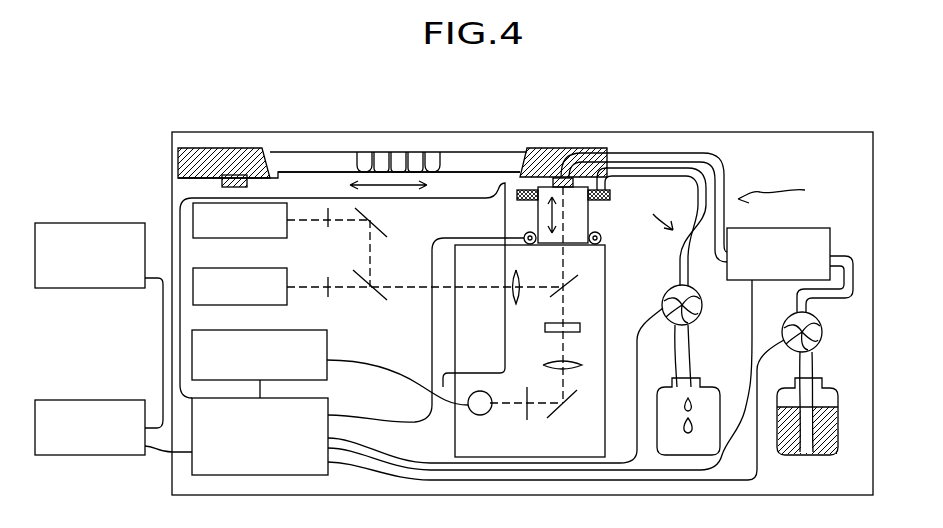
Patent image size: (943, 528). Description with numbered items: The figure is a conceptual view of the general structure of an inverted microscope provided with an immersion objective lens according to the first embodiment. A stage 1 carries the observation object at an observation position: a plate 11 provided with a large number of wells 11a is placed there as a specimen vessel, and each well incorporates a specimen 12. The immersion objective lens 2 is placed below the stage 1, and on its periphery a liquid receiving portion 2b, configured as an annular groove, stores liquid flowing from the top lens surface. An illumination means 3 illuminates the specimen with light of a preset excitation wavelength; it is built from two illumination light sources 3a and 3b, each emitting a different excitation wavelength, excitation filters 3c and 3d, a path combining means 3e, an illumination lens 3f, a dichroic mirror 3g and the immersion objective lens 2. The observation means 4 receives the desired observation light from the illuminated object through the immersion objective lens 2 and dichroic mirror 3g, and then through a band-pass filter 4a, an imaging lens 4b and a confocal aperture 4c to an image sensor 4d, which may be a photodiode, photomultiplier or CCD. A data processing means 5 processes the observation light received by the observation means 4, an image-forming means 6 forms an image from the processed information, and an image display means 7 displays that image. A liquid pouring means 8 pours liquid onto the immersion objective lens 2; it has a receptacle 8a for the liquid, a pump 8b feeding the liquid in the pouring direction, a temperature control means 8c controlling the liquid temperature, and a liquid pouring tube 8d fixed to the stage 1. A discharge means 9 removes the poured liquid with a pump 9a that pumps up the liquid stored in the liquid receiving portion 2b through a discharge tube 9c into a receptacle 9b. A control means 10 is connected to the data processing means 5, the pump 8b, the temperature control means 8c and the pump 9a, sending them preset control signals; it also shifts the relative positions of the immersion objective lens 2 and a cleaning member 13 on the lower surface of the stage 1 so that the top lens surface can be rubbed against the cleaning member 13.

The stage 1 is at (572, 153).
The immersion objective lens 2 is at (538, 217).
The liquid receiving portion 2b is at (598, 200).
The illumination means 3 is at (468, 200).
The illumination light source 3a is at (240, 233).
The illumination light source 3b is at (240, 300).
The excitation filter 3c is at (328, 230).
The excitation filter 3d is at (328, 298).
The path combining means 3e is at (367, 297).
The illumination lens 3f is at (517, 277).
The dichroic mirror 3g is at (570, 283).
The observation means 4 is at (505, 317).
The band-pass filter 4a is at (572, 323).
The imaging lens 4b is at (567, 363).
The confocal aperture 4c is at (527, 420).
The image sensor 4d is at (479, 416).
The data processing means 5 is at (327, 343).
The image-forming means 6 is at (87, 403).
The image display means 7 is at (87, 227).
The liquid pouring means 8 is at (778, 188).
The receptacle 8a is at (827, 397).
The pump 8b is at (823, 333).
The temperature control means 8c is at (830, 247).
The liquid pouring tube 8d is at (720, 170).
The discharge means 9 is at (656, 212).
The pump 9a is at (702, 300).
The receptacle 9b is at (705, 397).
The discharge tube 9c is at (610, 177).
The control means 10 is at (313, 407).
The plate 11 is at (463, 155).
The wells 11a is at (363, 153).
The specimen 12 is at (397, 152).
The cleaning member 13 is at (247, 181).